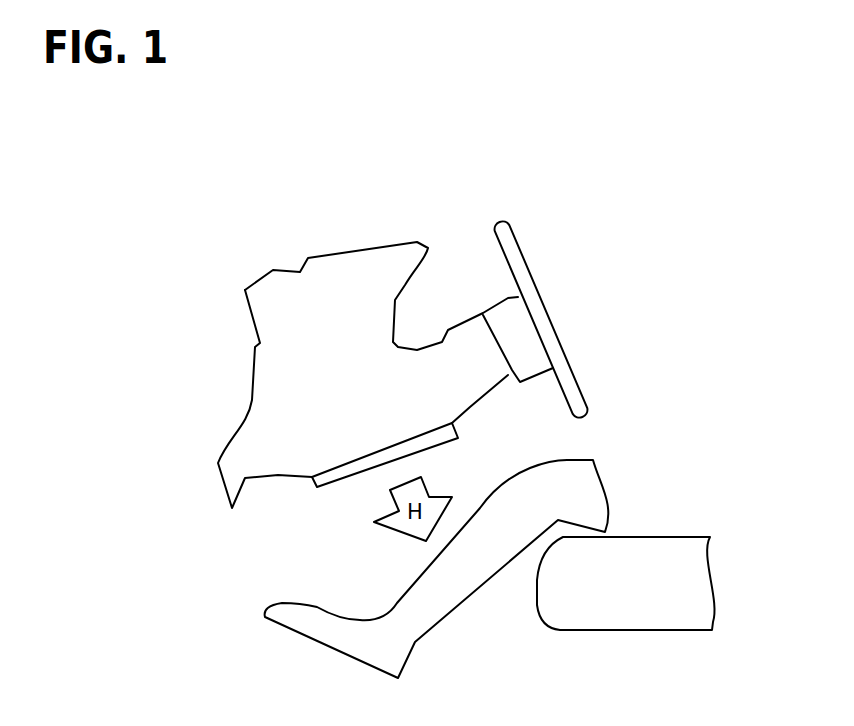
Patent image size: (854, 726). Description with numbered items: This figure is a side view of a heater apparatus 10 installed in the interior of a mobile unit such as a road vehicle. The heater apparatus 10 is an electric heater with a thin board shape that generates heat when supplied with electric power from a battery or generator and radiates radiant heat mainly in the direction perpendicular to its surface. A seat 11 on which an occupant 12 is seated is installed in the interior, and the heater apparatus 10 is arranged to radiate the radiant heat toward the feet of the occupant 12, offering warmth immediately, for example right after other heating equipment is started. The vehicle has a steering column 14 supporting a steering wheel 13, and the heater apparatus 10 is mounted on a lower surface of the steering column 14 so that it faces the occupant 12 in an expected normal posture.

The heater apparatus 10 is at (325, 485).
The seat 11 is at (600, 630).
The occupant 12 is at (450, 617).
The steering wheel 13 is at (540, 292).
The steering column 14 is at (470, 408).